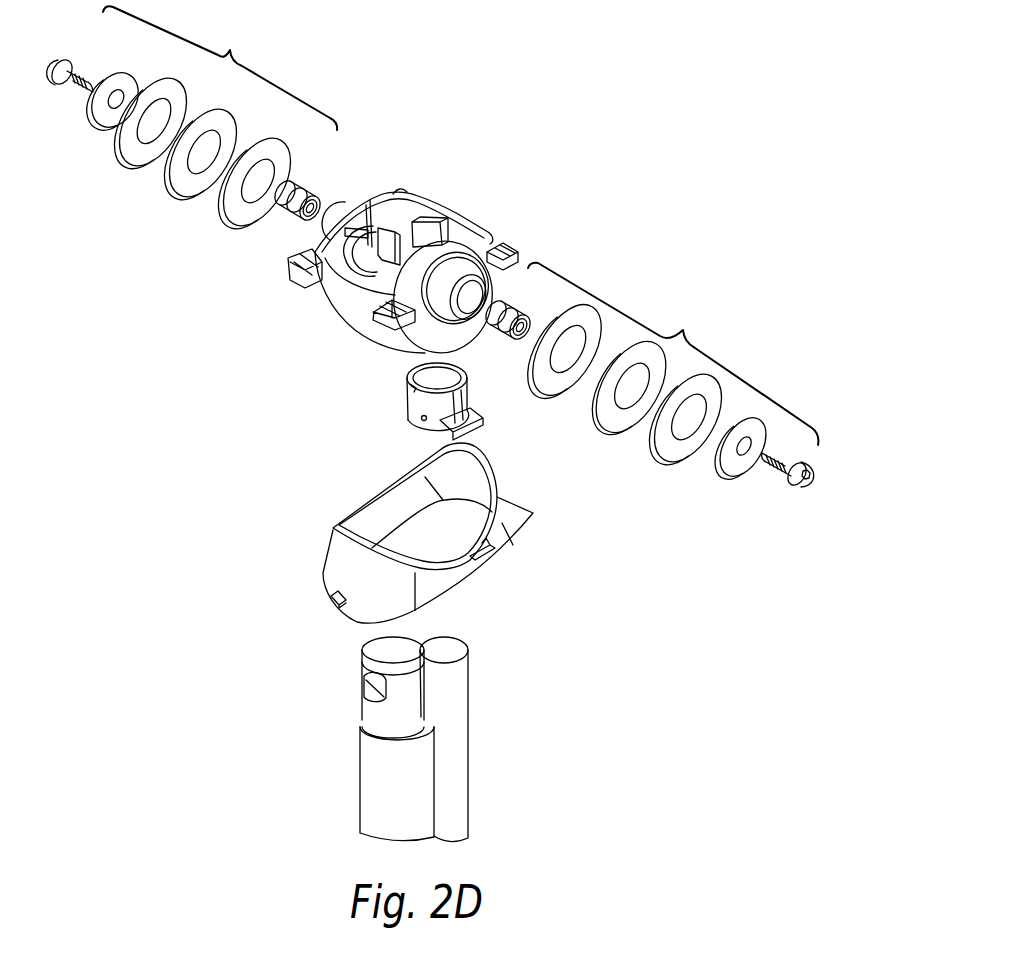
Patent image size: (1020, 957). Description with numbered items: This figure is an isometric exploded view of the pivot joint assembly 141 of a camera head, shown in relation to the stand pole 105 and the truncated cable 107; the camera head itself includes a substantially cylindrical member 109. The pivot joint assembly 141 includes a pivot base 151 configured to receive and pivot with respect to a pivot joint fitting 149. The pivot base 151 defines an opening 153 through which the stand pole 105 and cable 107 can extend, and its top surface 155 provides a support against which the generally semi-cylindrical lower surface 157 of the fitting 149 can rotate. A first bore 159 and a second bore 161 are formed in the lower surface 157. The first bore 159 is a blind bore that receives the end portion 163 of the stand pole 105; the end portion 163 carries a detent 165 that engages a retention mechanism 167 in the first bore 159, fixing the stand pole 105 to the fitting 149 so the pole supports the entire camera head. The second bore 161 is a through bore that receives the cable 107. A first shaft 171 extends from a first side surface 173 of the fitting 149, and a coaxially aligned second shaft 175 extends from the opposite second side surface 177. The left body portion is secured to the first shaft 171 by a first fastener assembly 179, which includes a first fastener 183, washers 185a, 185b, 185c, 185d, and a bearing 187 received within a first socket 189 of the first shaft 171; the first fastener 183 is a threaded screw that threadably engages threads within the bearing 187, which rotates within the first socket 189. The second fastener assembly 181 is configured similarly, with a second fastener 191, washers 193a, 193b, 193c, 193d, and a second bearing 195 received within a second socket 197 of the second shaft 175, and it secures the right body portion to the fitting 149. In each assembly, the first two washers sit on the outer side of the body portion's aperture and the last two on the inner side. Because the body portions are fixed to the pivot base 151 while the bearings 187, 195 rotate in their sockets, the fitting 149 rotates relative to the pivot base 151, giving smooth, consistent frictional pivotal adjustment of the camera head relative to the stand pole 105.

The stand pole 105 is at (361, 816).
The cable 107 is at (468, 767).
The substantially cylindrical member 109 is at (470, 422).
The pivot joint assembly 141 is at (641, 126).
The pivot joint fitting 149 is at (482, 216).
The pivot base 151 is at (327, 562).
The opening 153 is at (447, 548).
The top surface 155 is at (370, 526).
The lower surface 157 is at (387, 347).
The first bore 159 is at (360, 262).
The second bore 161 is at (433, 229).
The end portion 163 is at (357, 687).
The detent 165 is at (366, 683).
The retention mechanism 167 is at (381, 228).
The first shaft 171 is at (518, 277).
The first side surface 173 is at (482, 250).
The second shaft 175 is at (333, 216).
The second side surface 177 is at (397, 190).
The first fastener assembly 179 is at (673, 354).
The second fastener assembly 181 is at (220, 68).
The first fastener 183 is at (793, 494).
The first washer 185a is at (723, 475).
The second washer 185b is at (663, 462).
The third washer 185c is at (610, 430).
The fourth washer 185d is at (548, 395).
The bearing 187 is at (511, 340).
The first socket 189 is at (470, 302).
The second fastener 191 is at (56, 84).
The first washer 193a is at (104, 126).
The second washer 193b is at (140, 166).
The third washer 193c is at (192, 197).
The fourth washer 193d is at (231, 223).
The second bearing 195 is at (292, 221).
The second socket 197 is at (345, 202).